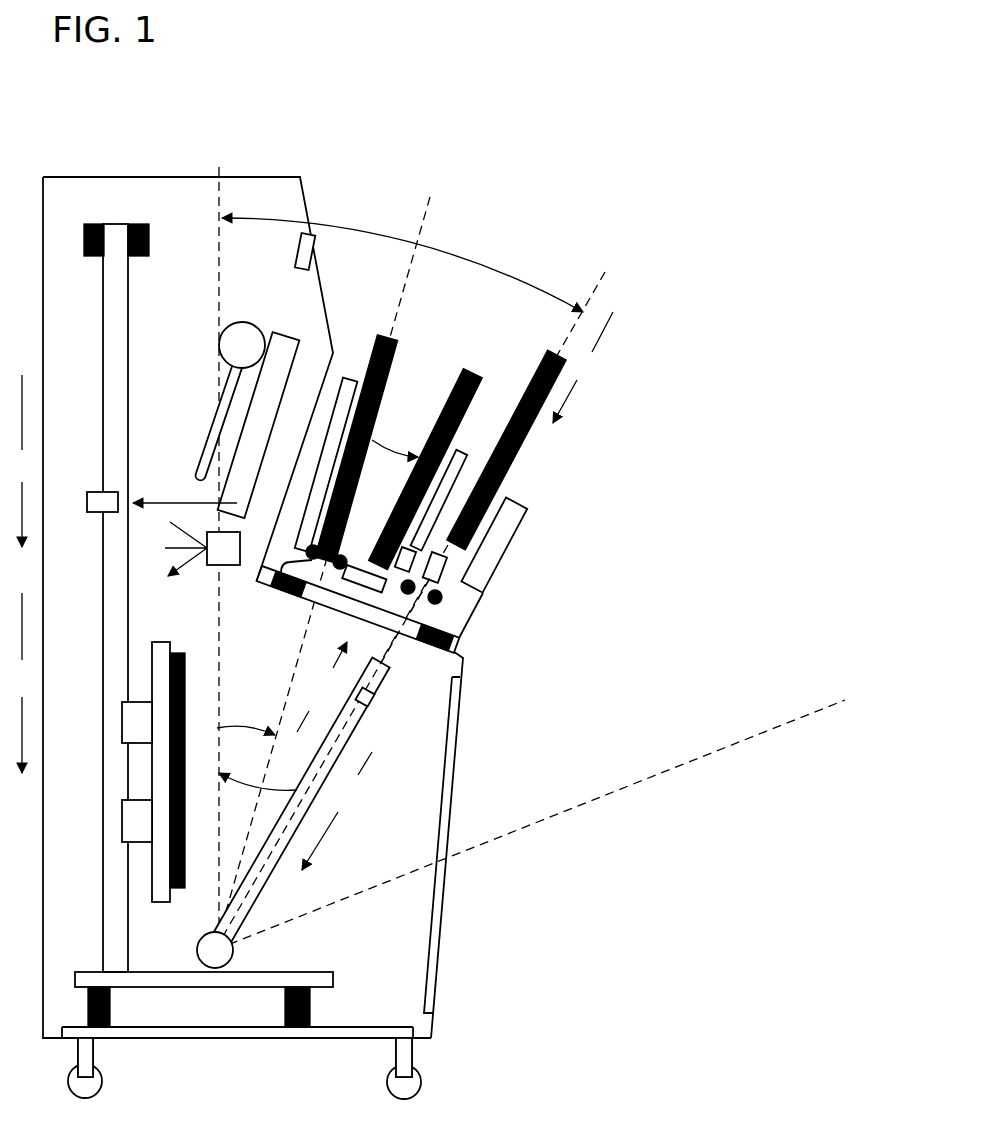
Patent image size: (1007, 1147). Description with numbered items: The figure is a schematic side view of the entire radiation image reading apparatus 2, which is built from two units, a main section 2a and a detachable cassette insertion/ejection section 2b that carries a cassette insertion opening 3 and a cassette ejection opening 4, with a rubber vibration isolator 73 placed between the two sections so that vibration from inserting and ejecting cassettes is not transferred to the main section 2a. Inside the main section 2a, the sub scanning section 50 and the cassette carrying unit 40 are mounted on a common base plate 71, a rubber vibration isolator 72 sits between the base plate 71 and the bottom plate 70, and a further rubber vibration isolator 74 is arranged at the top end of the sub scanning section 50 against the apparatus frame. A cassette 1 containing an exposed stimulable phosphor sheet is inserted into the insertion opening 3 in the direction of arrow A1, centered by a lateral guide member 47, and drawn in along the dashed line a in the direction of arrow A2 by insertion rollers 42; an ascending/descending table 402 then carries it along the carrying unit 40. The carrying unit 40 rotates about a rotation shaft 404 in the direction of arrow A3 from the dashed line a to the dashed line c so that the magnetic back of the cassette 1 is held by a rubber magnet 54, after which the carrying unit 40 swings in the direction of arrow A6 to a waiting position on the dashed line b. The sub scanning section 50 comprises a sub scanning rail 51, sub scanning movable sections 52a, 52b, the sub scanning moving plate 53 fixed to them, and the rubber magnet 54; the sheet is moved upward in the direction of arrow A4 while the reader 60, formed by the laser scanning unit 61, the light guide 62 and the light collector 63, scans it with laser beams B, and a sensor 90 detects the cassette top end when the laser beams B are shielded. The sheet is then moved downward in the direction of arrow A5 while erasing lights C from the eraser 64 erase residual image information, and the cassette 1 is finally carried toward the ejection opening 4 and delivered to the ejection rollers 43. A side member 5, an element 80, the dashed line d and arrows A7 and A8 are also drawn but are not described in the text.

The cassette 1 is at (527, 435).
The apparatus 2 is at (163, 177).
The main section 2a is at (488, 743).
The cassette insertion/ejection section 2b is at (540, 618).
The cassette insertion opening 3 is at (508, 497).
The cassette ejection opening 4 is at (408, 402).
The side frame 5 is at (460, 697).
The cassette carrying unit 40 is at (274, 871).
The insertion rollers 42 is at (444, 598).
The ejection rollers 43 is at (276, 572).
The lateral guide member 47 is at (452, 565).
The sub scanning section 50 is at (95, 844).
The sub scanning rail 51 is at (129, 308).
The sub scanning movable section 52a is at (132, 722).
The sub scanning movable section 52b is at (132, 822).
The sub scanning moving plate 53 is at (160, 775).
The rubber magnet 54 is at (186, 662).
The reader 60 is at (204, 409).
The laser scanning unit 61 is at (290, 333).
The light guide 62 is at (207, 446).
The light collector 63 is at (243, 322).
The eraser 64 is at (225, 566).
The bottom plate 70 is at (254, 1039).
The base plate 71 is at (275, 977).
The rubber vibration isolator 72 is at (111, 1005).
The rubber vibration isolator 73 is at (291, 592).
The rubber vibration isolator 74 is at (140, 224).
The sensor 80 is at (316, 251).
The sensor 90 is at (95, 512).
The ascending/descending table 402 is at (373, 701).
The rotation shaft 404 is at (215, 968).
The dashed line a is at (415, 599).
The dashed line b is at (327, 558).
The dashed line c is at (219, 544).
The axis d is at (537, 815).
The arrow A1 is at (583, 367).
The arrow A2 is at (337, 811).
The arrow A3 is at (258, 767).
The arrow A4 is at (21, 461).
The arrow A5 is at (21, 683).
The arrow A6 is at (246, 719).
The direction A7 is at (322, 687).
The direction A8 is at (395, 438).
The laser beams B is at (185, 489).
The erasing lights C is at (174, 549).